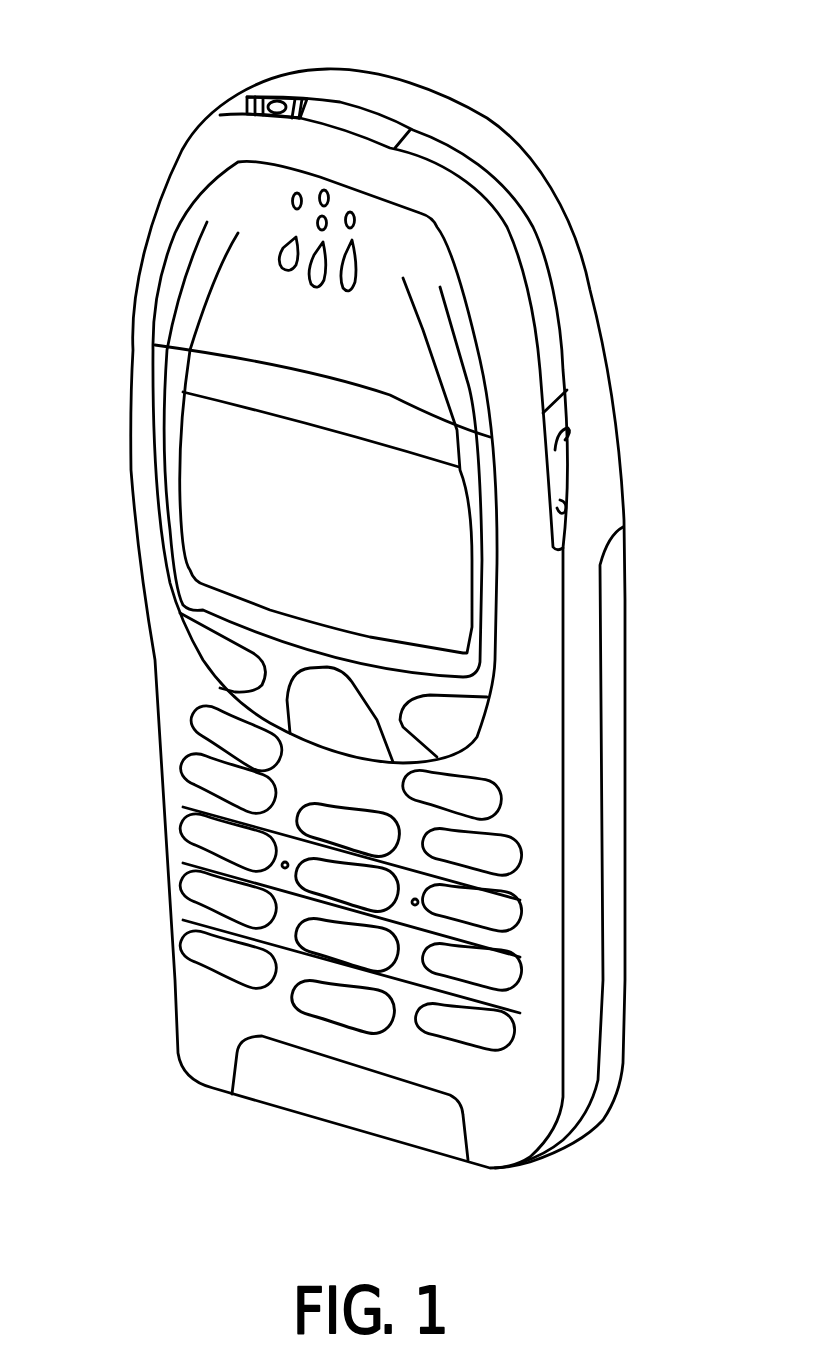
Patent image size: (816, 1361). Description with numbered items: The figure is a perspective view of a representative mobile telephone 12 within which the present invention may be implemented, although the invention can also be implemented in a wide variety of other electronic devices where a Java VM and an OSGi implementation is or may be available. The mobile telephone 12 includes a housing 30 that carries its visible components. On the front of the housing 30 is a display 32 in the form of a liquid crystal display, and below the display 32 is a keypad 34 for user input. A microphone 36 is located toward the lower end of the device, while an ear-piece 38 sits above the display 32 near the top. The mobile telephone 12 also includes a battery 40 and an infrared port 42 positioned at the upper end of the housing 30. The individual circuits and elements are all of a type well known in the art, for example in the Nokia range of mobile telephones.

The mobile telephone 12 is at (536, 82).
The housing 30 is at (578, 293).
The display 32 is at (437, 580).
The keypad 34 is at (468, 1032).
The microphone 36 is at (263, 1083).
The ear-piece 38 is at (307, 233).
The battery 40 is at (605, 1005).
The infrared port 42 is at (353, 117).